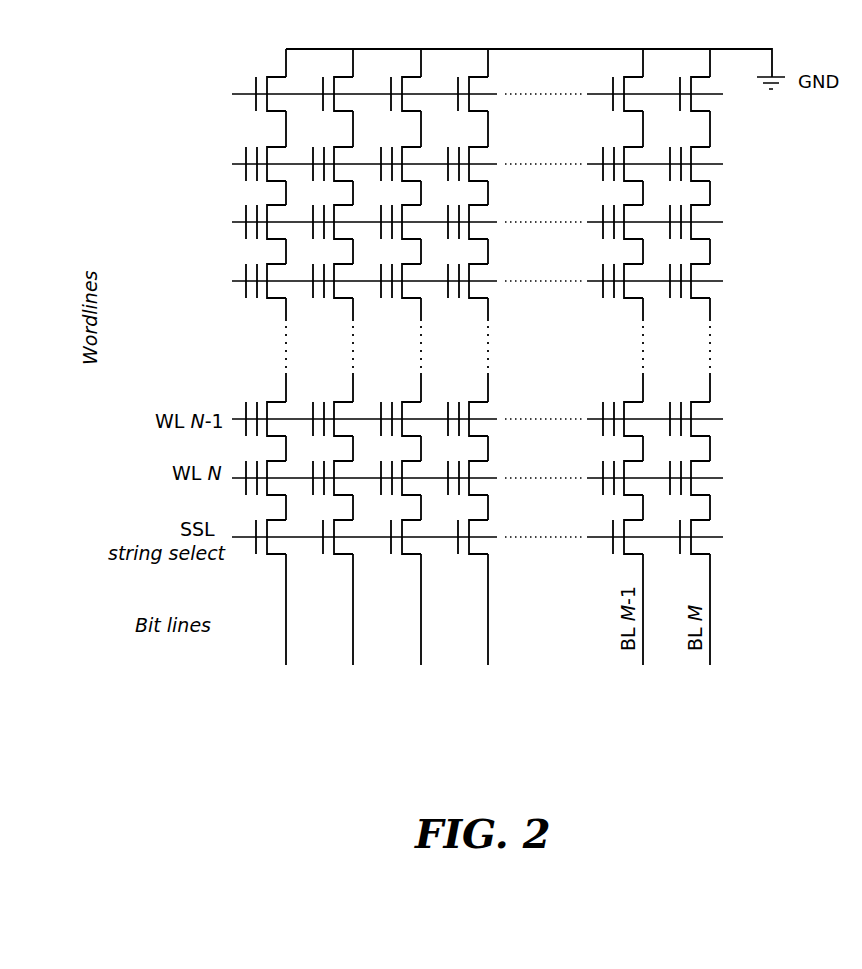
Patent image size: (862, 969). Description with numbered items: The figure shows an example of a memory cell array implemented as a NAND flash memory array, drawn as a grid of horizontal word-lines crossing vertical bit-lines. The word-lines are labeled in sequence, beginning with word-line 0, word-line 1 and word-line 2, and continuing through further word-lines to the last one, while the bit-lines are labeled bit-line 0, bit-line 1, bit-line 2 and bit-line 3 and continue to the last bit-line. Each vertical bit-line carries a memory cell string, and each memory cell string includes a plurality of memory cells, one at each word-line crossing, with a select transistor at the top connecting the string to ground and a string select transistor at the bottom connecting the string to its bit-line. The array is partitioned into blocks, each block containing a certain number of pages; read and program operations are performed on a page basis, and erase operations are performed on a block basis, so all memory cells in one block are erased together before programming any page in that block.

The wordline 0 / bit line 0 is at (450, 357).
The wordline 1 / bit line 1 is at (450, 357).
The wordline 2 / bit line 2 is at (450, 357).
The bit line 3 is at (475, 357).